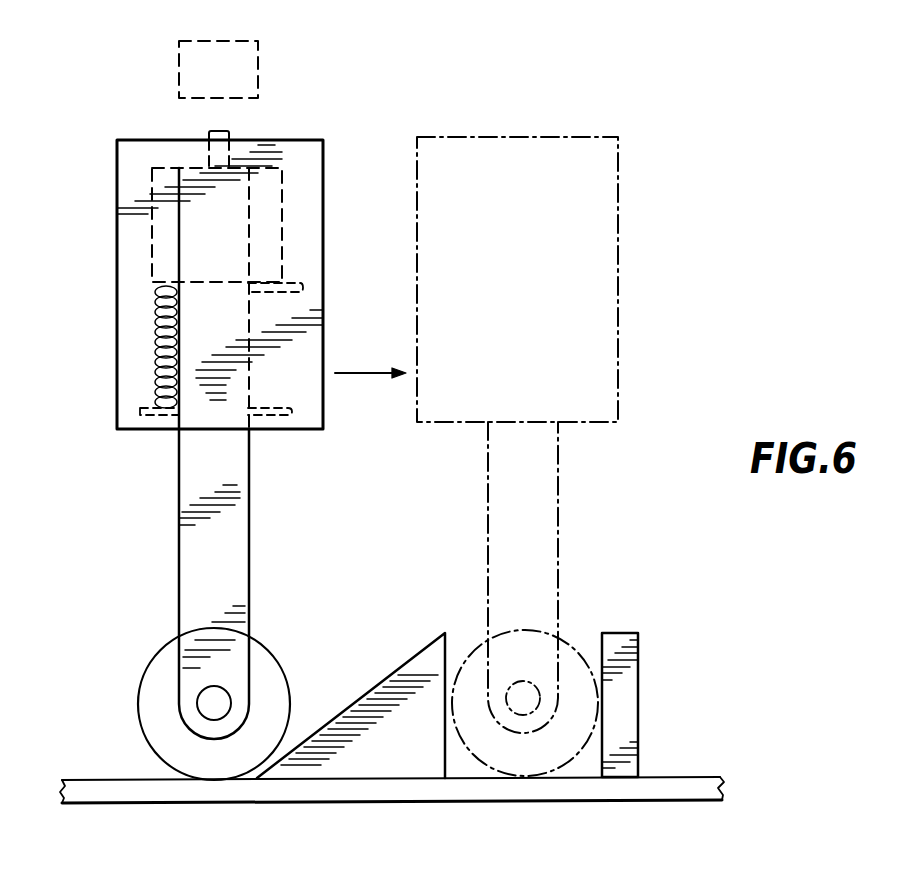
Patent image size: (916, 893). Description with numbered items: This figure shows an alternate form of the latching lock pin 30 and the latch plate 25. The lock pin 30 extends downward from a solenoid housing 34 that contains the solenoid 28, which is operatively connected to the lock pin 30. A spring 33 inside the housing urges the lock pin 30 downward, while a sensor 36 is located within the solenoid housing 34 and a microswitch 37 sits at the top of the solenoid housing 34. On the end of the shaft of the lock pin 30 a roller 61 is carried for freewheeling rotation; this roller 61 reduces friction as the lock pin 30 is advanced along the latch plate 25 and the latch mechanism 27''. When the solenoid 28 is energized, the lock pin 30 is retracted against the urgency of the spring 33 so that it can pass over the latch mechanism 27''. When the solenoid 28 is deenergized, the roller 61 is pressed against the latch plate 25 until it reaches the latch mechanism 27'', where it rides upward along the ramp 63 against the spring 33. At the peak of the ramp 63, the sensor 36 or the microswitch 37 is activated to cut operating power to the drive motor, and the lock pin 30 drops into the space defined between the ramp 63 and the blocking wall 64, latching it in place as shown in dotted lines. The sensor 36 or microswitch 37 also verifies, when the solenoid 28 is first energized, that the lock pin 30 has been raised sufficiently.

The latch plate 25 is at (657, 787).
The latch mechanism 27'' is at (687, 605).
The solenoid 28 is at (152, 230).
The lock pin 30 is at (232, 470).
The spring 33 is at (140, 325).
The solenoid housing 34 is at (116, 178).
The sensor 36 is at (300, 282).
The microswitch 37 is at (258, 48).
The roller 61 is at (148, 690).
The ramp 63 is at (373, 767).
The blocking wall 64 is at (632, 714).